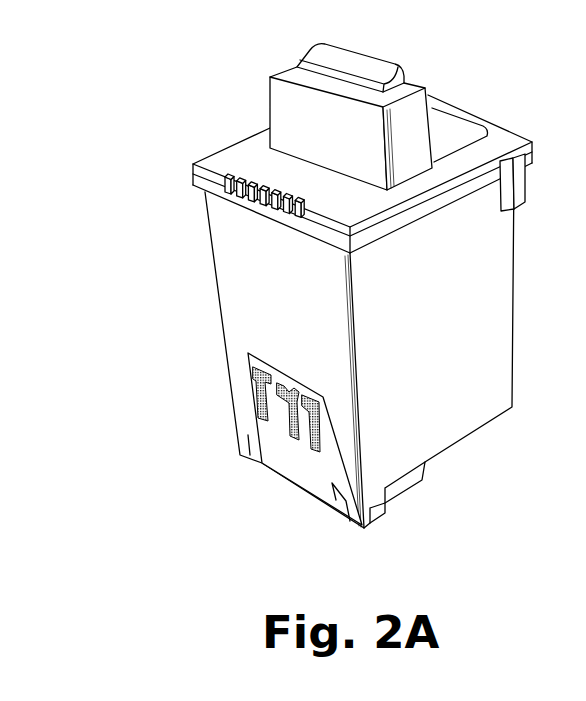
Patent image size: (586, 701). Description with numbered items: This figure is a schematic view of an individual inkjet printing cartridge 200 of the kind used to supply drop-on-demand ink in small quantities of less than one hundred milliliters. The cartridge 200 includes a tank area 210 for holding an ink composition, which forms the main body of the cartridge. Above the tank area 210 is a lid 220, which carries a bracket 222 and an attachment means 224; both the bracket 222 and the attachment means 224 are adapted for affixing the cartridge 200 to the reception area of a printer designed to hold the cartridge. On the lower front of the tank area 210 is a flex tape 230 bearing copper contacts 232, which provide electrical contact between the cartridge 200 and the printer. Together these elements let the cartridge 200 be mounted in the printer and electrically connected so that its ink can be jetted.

The cartridge 200 is at (222, 111).
The tank area 210 is at (257, 288).
The lid 220 is at (500, 138).
The bracket 222 is at (240, 195).
The attachment means 224 is at (413, 112).
The flex tape 230 is at (303, 468).
The copper contacts 232 is at (252, 392).